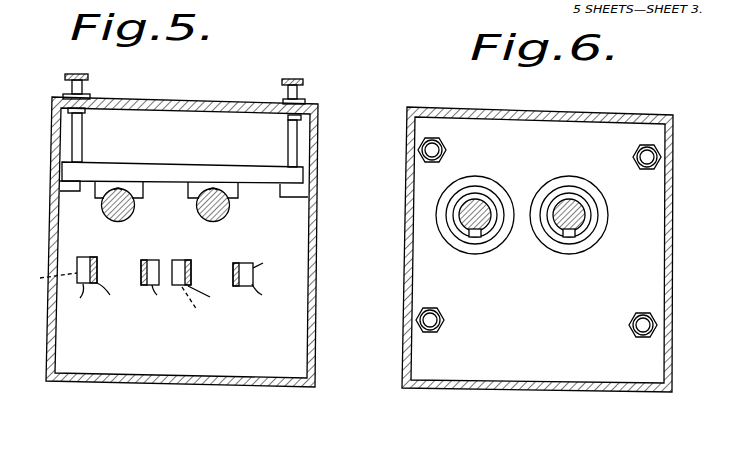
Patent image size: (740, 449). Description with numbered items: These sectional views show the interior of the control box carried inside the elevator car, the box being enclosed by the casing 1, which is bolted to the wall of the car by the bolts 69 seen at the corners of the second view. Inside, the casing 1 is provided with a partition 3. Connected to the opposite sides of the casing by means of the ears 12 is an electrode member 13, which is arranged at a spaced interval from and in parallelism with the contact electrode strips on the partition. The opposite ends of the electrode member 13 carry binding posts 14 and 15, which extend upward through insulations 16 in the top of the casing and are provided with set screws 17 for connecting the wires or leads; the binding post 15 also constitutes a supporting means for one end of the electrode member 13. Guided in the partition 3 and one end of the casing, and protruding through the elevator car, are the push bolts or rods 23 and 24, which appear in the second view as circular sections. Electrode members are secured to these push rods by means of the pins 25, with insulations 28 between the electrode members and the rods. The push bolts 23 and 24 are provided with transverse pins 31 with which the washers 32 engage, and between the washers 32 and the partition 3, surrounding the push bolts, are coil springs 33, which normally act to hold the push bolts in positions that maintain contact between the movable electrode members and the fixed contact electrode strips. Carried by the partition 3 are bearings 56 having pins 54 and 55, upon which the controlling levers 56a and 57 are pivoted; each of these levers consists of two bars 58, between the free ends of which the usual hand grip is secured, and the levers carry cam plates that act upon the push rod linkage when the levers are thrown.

In FIG. 5, the casing 1 is at (316, 292).
In FIG. 6, the casing 1 is at (676, 214).
In FIG. 5, the partition 3 is at (298, 338).
In FIG. 5, the ears 12 is at (70, 183).
In FIG. 5, the electrode member 13 is at (193, 163).
In FIG. 5, the binding post 14 is at (298, 126).
In FIG. 5, the binding post 15 is at (72, 122).
In FIG. 5, the insulations 16 is at (88, 97).
In FIG. 5, the set screws 17 is at (87, 75).
In FIG. 6, the push bolt 23 is at (585, 221).
In FIG. 5, the push bolt 24 is at (131, 214).
In FIG. 6, the push bolt 24 is at (485, 224).
In FIG. 5, the pins 25 is at (103, 203).
In FIG. 5, the insulations 28 is at (97, 189).
In FIG. 6, the transverse pins 31 is at (556, 178).
In FIG. 6, the washers 32 is at (606, 215).
In FIG. 6, the coil springs 33 is at (589, 204).
In FIG. 5, the pin 54 is at (44, 282).
In FIG. 5, the pin 55 is at (234, 290).
In FIG. 5, the bearings 56 is at (178, 301).
In FIG. 5, the controlling lever 56a is at (117, 295).
In FIG. 5, the controlling lever 57 is at (211, 299).
In FIG. 5, the bars 58 is at (95, 249).
In FIG. 6, the bolts 69 is at (443, 150).